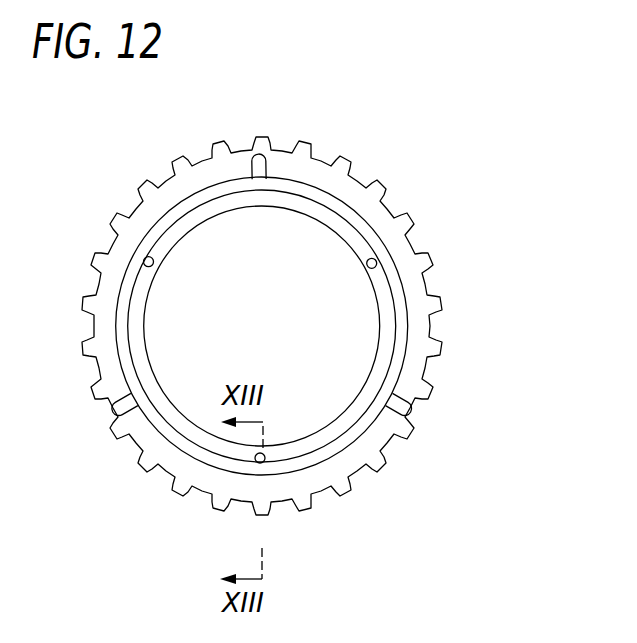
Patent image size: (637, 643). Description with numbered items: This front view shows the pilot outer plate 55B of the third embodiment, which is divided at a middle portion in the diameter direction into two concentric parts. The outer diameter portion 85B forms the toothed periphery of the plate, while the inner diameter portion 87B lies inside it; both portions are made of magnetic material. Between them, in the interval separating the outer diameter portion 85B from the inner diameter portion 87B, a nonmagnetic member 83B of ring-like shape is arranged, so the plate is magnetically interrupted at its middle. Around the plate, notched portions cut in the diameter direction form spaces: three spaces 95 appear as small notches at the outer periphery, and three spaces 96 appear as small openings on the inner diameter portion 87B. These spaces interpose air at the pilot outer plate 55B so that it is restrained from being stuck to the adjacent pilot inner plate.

The pilot outer plate 55B is at (369, 149).
The outer diameter portion 85B is at (178, 177).
The nonmagnetic member 83B is at (302, 188).
The inner diameter portion 87B is at (205, 223).
The space 95 is at (257, 157).
The space 96 is at (146, 257).